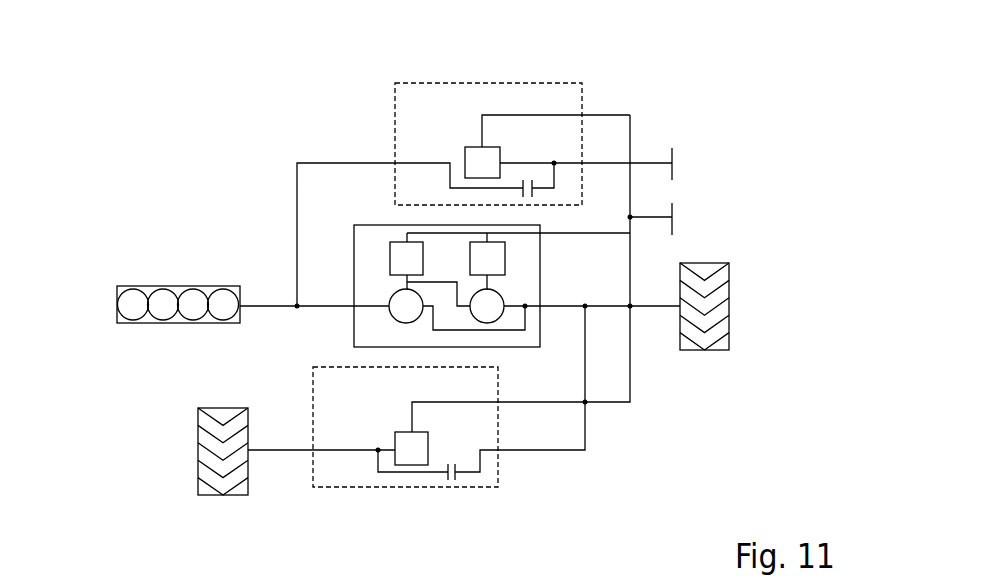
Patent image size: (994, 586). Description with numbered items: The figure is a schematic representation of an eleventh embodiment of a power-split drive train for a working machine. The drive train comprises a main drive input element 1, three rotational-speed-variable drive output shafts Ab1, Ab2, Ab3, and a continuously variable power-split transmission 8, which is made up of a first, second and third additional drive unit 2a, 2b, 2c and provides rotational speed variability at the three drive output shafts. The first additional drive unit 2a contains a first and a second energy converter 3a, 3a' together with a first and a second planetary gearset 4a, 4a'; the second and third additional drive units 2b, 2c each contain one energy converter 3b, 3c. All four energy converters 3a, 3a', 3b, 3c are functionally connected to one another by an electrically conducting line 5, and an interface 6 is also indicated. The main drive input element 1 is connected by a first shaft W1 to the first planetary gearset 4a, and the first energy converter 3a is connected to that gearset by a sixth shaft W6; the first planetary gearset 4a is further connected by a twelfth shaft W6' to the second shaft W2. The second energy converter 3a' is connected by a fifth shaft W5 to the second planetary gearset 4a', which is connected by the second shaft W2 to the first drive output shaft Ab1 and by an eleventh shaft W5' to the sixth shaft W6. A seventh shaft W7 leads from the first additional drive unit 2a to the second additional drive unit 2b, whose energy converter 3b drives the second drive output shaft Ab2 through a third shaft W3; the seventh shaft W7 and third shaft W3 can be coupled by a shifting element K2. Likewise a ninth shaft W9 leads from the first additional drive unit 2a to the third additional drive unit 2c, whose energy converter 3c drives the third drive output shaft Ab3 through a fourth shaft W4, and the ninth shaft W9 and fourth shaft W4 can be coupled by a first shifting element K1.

The main drive input element 1 is at (110, 287).
The first additional drive unit 2a is at (368, 225).
The second additional drive unit 2b is at (500, 465).
The third additional drive unit 2c is at (393, 138).
The first energy converter of the first additional drive unit 3a is at (227, 219).
The second energy converter of the first additional drive unit 3a' is at (647, 243).
The energy converter of the second additional drive unit 3b is at (413, 457).
The energy converter of the third additional drive unit 3c is at (478, 158).
The first planetary gearset of the first additional drive unit 4a is at (226, 336).
The second planetary gearset of the first additional drive unit 4a' is at (522, 430).
The electric line 5 is at (598, 114).
The interface 6 is at (646, 217).
The continuously variable power-split transmission 8 is at (717, 97).
The first shifting element of the third additional drive unit K1 is at (542, 195).
The shifting element of the second additional drive unit K2 is at (452, 482).
The first shaft W1 is at (340, 306).
The second shaft W2 is at (553, 306).
The third shaft W3 is at (340, 450).
The fourth shaft W4 is at (617, 163).
The fifth shaft W5 is at (659, 273).
The eleventh shaft W5' is at (430, 155).
The sixth shaft W6 is at (214, 249).
The twelfth shaft W6' is at (271, 367).
The seventh shaft W7 is at (586, 428).
The ninth shaft W9 is at (296, 182).
The first drive output shaft Ab1 is at (678, 350).
The second drive output shaft Ab2 is at (293, 450).
The third drive output shaft Ab3 is at (640, 163).